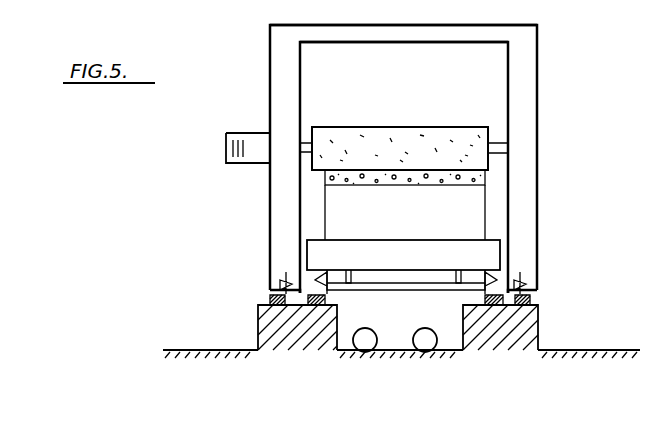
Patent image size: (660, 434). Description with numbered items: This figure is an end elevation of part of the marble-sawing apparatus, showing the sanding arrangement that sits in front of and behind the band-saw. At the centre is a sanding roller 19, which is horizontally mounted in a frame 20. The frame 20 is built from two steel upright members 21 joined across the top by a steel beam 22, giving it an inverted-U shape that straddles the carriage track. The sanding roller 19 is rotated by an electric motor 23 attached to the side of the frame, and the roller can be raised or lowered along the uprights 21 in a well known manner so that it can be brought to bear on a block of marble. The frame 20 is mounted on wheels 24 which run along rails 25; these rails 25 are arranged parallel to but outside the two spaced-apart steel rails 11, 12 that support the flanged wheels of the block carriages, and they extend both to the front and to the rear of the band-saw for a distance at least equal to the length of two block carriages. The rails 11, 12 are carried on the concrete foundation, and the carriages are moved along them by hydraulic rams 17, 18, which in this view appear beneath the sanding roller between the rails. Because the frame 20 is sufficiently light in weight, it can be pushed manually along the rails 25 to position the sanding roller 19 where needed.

The steel rail 11 is at (327, 300).
The steel rail 12 is at (485, 299).
The hydraulic ram 17 is at (368, 337).
The hydraulic ram 18 is at (428, 340).
The sanding roller 19 is at (405, 137).
The frame 20 is at (558, 120).
The steel upright member 21 is at (275, 89).
The steel beam 22 is at (412, 35).
The electric motor 23 is at (226, 152).
The wheel 24 is at (286, 280).
The rail 25 is at (268, 300).